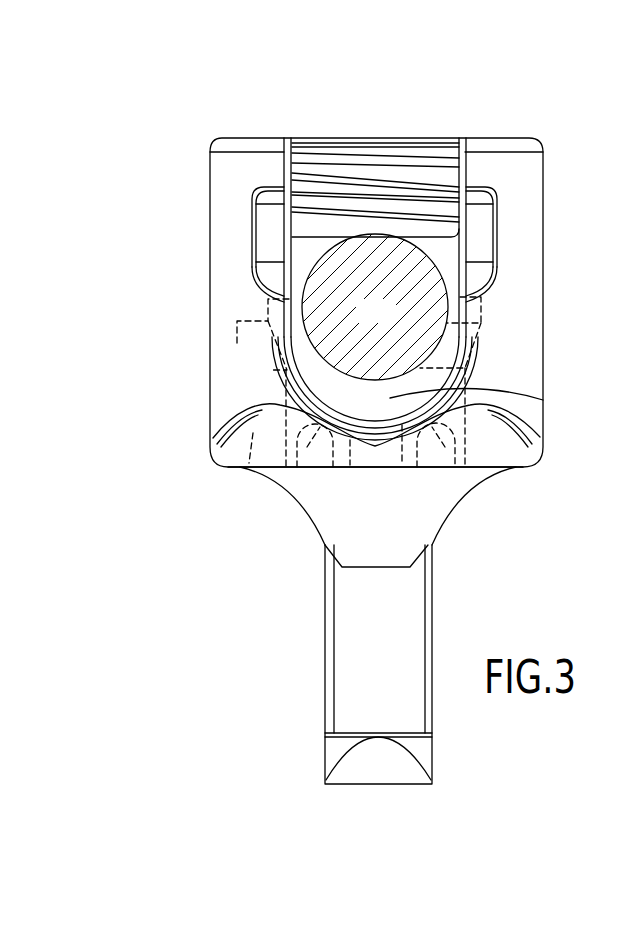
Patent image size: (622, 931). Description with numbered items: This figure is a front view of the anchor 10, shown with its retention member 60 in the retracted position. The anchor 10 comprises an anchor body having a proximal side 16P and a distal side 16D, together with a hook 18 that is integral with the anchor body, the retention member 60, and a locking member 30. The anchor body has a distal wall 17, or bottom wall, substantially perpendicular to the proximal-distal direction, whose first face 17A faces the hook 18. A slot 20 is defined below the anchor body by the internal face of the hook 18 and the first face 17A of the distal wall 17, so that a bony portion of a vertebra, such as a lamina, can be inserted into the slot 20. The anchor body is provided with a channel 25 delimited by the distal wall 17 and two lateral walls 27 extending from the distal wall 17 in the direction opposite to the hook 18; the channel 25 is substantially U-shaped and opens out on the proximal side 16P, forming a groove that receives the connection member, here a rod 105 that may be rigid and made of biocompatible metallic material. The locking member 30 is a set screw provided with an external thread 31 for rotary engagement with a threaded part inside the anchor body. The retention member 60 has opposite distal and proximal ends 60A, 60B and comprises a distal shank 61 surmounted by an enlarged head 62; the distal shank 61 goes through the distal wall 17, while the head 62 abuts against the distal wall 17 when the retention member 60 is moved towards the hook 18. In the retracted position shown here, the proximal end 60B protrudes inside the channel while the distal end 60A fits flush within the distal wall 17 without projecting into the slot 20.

The anchor 10 is at (160, 153).
The proximal side 16P is at (278, 131).
The distal side 16D is at (279, 492).
The locking member 30 is at (346, 140).
The external thread 31 is at (394, 168).
The channel 25 is at (310, 253).
The lateral walls 27 is at (228, 310).
The rod 105 is at (363, 321).
The enlarged head 62 is at (482, 346).
The distal shank 61 is at (528, 400).
The retention member 60 is at (284, 382).
The distal end 60A is at (254, 470).
The proximal end 60B is at (237, 343).
The distal wall 17 is at (490, 442).
The first face 17A is at (377, 470).
The slot 20 is at (367, 671).
The hook 18 is at (321, 753).